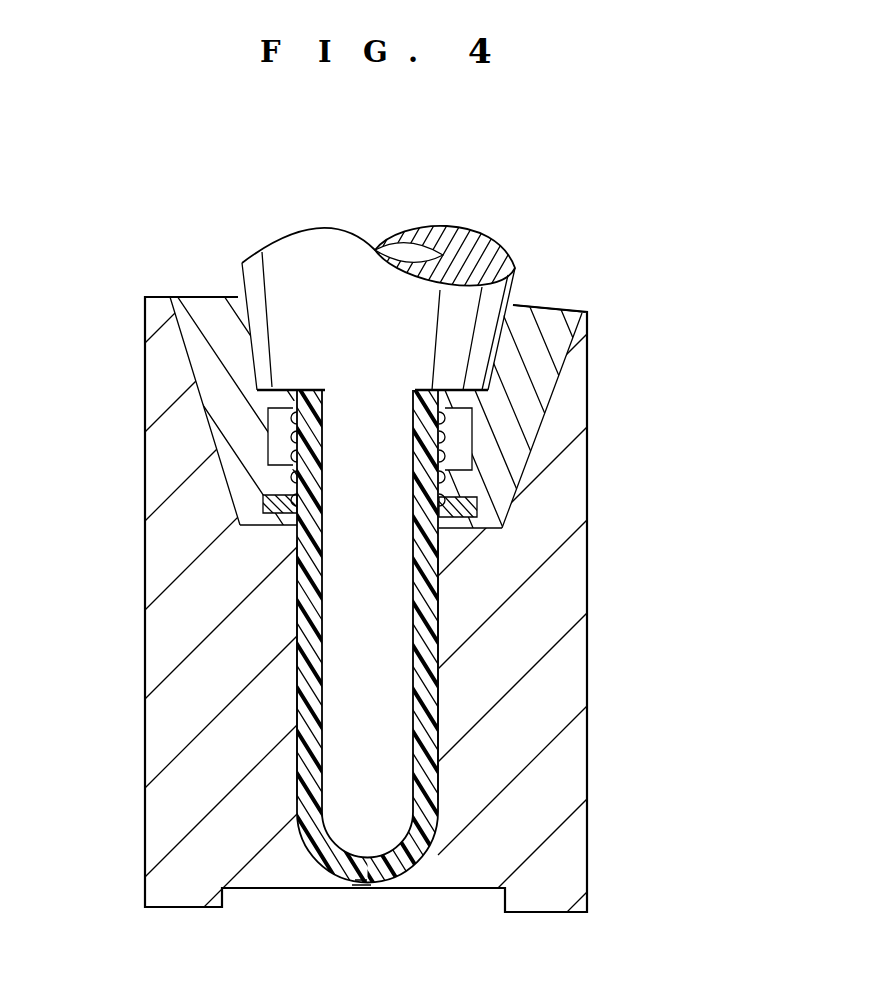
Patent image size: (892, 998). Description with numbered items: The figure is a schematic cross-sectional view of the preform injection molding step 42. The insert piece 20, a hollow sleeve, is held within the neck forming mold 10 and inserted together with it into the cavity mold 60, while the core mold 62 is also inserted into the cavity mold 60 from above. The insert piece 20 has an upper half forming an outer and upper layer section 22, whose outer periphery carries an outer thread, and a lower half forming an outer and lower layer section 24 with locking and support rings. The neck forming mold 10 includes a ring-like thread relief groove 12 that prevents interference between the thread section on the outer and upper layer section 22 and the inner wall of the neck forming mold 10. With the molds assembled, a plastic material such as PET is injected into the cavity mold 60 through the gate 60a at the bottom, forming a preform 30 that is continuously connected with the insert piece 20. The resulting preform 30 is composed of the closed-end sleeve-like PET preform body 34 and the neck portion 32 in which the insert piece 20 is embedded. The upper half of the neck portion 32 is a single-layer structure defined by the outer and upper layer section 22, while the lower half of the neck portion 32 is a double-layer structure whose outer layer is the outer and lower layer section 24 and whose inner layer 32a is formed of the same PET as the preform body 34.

The neck forming mold 10 is at (545, 350).
The thread relief groove 12 is at (460, 452).
The insert piece 20 is at (458, 430).
The outer and upper layer section 22 is at (268, 430).
The outer and lower layer section 24 is at (290, 476).
The preform 30 is at (445, 737).
The neck portion 32 is at (335, 505).
The inner layer 32a is at (312, 510).
The preform body 34 is at (313, 625).
The preform injection molding step 42 is at (531, 239).
The cavity mold 60 is at (165, 643).
The gate 60a is at (363, 886).
The core mold 62 is at (290, 260).